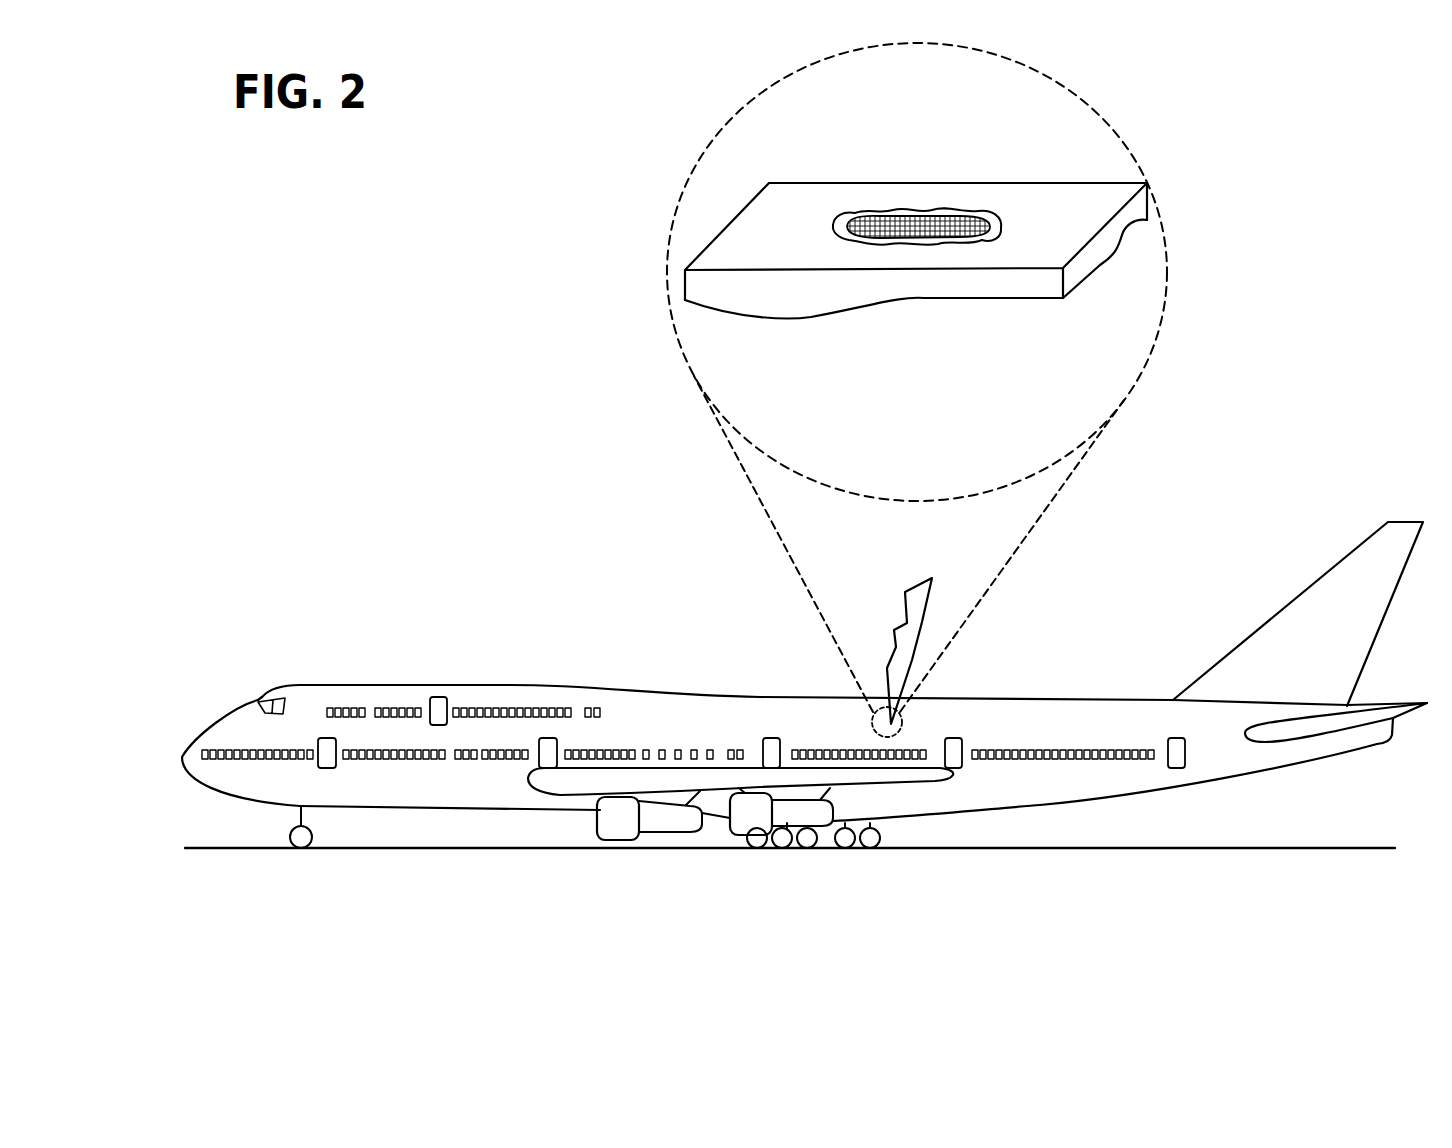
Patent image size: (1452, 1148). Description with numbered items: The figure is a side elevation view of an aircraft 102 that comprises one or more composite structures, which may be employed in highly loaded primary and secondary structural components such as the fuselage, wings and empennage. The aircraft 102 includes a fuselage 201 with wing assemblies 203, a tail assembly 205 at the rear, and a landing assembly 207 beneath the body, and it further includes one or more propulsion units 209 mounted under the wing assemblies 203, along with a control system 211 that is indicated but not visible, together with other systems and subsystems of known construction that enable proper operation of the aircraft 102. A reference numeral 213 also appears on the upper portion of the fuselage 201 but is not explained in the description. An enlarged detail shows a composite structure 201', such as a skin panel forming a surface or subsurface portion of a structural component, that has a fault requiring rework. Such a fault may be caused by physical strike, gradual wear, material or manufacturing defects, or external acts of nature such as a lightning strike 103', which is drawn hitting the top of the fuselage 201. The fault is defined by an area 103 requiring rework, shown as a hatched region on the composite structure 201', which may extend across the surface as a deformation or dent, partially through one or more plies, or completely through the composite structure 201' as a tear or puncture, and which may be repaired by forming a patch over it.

The aircraft 102 is at (302, 507).
The area requiring rework 103 is at (917, 183).
The lightning strike 103' is at (889, 649).
The fuselage 201 is at (814, 811).
The composite structure 201' is at (916, 219).
The wing assemblies 203 is at (560, 790).
The tail assembly 205 is at (1288, 568).
The landing assembly 207 is at (803, 865).
The propulsion units 209 is at (617, 833).
The control system 211 is at (183, 785).
The upper fuselage crown 213 is at (600, 648).